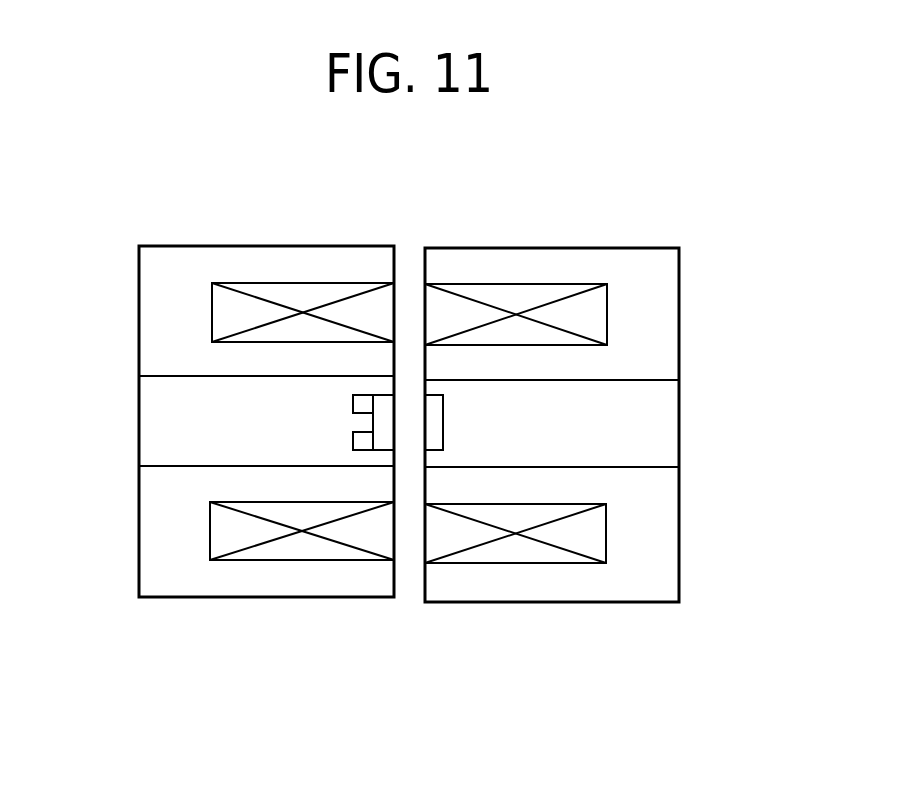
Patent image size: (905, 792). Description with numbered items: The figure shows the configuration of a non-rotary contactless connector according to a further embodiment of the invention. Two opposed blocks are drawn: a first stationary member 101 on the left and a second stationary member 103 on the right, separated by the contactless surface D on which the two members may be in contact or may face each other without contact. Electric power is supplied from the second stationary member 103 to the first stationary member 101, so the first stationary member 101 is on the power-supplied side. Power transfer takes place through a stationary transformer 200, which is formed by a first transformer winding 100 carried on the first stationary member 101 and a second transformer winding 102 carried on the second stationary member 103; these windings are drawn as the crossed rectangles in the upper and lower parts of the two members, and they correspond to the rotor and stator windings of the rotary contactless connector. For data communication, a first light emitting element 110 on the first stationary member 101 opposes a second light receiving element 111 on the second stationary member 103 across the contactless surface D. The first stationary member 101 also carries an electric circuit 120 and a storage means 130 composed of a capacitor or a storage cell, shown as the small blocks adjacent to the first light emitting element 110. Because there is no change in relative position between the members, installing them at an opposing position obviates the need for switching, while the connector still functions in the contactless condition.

The first transformer winding 100 is at (302, 296).
The first stationary member 101 is at (174, 577).
The second transformer winding 102 is at (515, 296).
The second stationary member 103 is at (627, 580).
The first light emitting element 110 is at (382, 422).
The second light receiving element 111 is at (437, 422).
The electric circuit 120 is at (363, 403).
The storage means 130 is at (363, 441).
The stationary transformer 200 is at (507, 623).
The contactless surface D is at (406, 604).